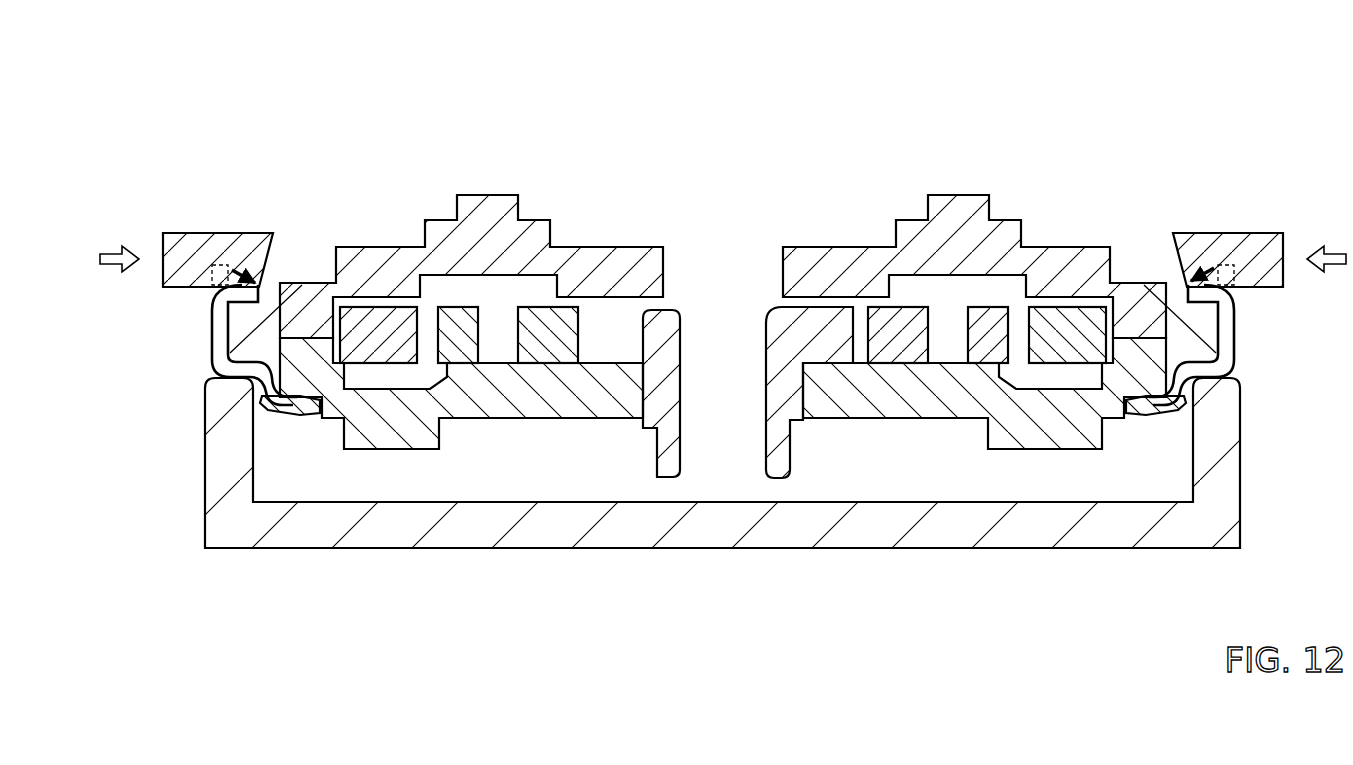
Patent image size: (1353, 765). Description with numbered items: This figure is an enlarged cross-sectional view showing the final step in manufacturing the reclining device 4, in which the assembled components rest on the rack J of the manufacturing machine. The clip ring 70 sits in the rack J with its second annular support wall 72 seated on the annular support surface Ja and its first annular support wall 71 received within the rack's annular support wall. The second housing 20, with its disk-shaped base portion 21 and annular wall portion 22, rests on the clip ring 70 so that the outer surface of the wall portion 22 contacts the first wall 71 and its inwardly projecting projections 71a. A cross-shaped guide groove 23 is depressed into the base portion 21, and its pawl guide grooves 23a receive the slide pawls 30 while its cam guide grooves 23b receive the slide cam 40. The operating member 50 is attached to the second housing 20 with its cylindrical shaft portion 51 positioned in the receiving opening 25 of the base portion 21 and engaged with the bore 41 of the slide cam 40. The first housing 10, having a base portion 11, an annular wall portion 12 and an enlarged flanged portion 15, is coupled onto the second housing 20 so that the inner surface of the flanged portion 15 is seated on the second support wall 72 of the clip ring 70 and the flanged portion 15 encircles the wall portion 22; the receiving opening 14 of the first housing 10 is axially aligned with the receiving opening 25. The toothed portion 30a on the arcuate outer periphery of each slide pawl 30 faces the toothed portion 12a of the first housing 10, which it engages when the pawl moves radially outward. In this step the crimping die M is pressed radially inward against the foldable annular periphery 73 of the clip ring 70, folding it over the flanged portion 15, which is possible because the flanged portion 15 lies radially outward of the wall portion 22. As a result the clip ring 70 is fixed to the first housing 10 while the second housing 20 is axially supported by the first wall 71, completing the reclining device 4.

The reclining device 4 is at (922, 122).
The first housing 10 is at (1042, 268).
The base portion 11 is at (838, 266).
The annular wall portion 12 is at (306, 310).
The toothed portion 12a is at (337, 325).
The receiving opening 14 is at (720, 272).
The flanged portion 15 is at (250, 328).
The second housing 20 is at (945, 360).
The base portion 21 is at (876, 399).
The annular wall portion 22 is at (307, 361).
The guide groove 23 is at (683, 483).
The pawl guide grooves 23a is at (461, 370).
The cam guide grooves 23b is at (626, 362).
The receiving opening 25 is at (720, 391).
The slide pawls 30 is at (388, 305).
The toothed portion 30a is at (747, 249).
The slide cam 40 is at (541, 305).
The bore 41 is at (594, 334).
The operating member 50 is at (810, 308).
The cylindrical shaft portion 51 is at (778, 468).
The clip ring 70 is at (1236, 316).
The first annular support wall 71 is at (745, 485).
The projections 71a is at (285, 406).
The second annular support wall 72 is at (227, 333).
The foldable annular periphery 73 is at (241, 295).
The rack J is at (703, 506).
The support surface Ja is at (210, 353).
The crimping die M is at (177, 240).